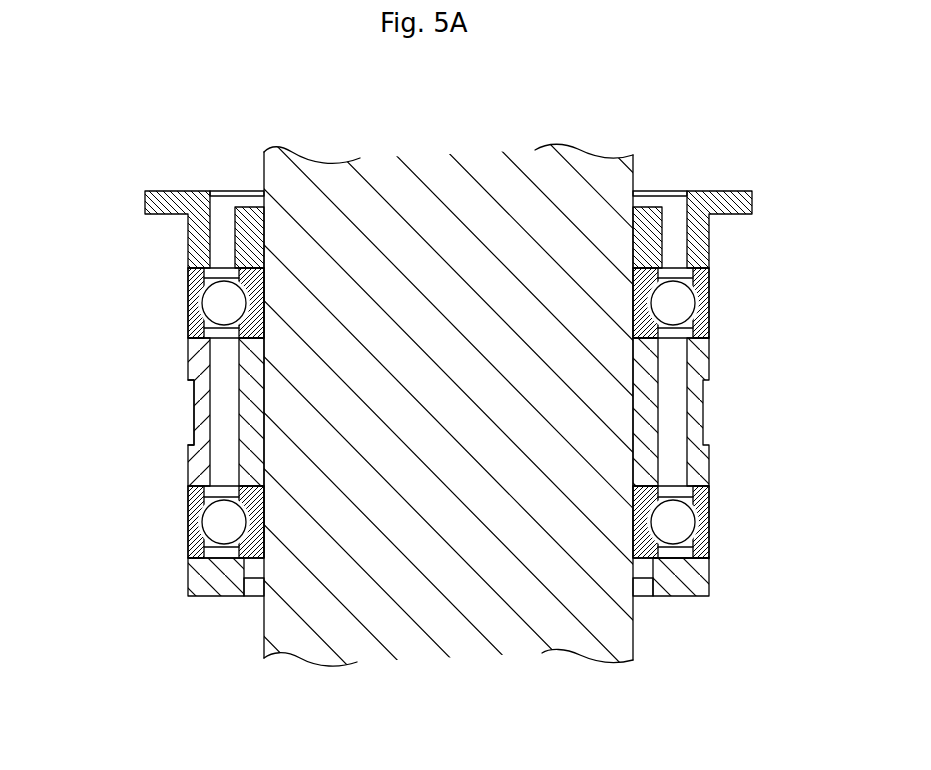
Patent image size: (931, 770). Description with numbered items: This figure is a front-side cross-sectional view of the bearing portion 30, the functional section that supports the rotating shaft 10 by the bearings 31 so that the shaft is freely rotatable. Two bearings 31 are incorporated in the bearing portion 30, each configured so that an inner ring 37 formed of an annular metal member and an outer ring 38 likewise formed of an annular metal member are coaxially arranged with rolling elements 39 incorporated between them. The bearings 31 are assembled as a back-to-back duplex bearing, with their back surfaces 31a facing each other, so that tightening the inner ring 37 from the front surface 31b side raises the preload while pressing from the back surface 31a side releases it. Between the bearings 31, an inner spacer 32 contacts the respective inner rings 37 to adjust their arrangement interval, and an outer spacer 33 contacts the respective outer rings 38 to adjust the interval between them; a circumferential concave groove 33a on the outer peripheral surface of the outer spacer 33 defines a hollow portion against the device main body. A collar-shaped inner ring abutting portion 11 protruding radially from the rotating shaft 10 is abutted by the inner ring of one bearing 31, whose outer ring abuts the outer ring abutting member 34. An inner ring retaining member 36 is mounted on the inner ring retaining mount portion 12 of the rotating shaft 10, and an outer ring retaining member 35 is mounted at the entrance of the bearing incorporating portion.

The rotating shaft 10 is at (570, 148).
The inner ring abutting portion 11 is at (257, 578).
The inner ring retaining mount portion 12 is at (247, 247).
The bearing portion 30 is at (187, 378).
The bearing 31 is at (713, 304).
The back surface 31a is at (677, 340).
The front surface 31b is at (678, 263).
The inner spacer 32 is at (658, 400).
The outer spacer 33 is at (704, 445).
The concave groove 33a is at (194, 417).
The outer ring abutting member 34 is at (220, 590).
The outer ring retaining member 35 is at (190, 256).
The inner ring retaining member 36 is at (237, 232).
The inner ring 37 is at (683, 560).
The outer ring 38 is at (687, 492).
The rolling element 39 is at (688, 527).